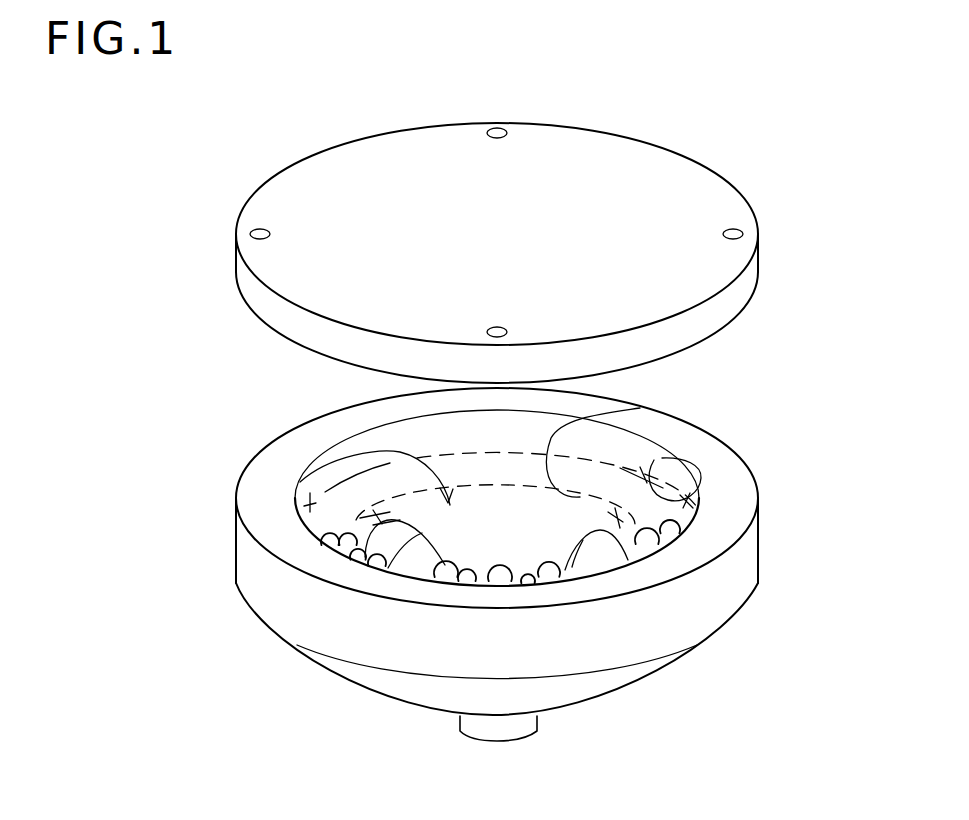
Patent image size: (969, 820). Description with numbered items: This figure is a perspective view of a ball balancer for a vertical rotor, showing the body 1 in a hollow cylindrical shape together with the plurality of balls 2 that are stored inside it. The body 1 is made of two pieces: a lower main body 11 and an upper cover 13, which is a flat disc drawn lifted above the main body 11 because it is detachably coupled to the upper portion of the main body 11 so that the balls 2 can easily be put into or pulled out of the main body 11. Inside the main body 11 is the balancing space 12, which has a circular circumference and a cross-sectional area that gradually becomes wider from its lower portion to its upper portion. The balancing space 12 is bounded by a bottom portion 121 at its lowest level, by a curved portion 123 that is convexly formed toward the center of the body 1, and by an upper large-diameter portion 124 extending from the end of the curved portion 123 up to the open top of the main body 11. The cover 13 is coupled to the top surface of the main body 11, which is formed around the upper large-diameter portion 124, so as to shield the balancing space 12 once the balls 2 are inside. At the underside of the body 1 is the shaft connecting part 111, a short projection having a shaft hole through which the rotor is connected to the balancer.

The body 1 is at (136, 370).
The upper cover 13 is at (220, 317).
The lower main body 11 is at (228, 453).
The shaft connecting part 111 is at (506, 738).
The balancing space 12 is at (300, 482).
The bottom portion 121 is at (632, 563).
The curved portion 123 is at (640, 408).
The upper large-diameter portion 124 is at (654, 460).
The balls 2 is at (412, 537).